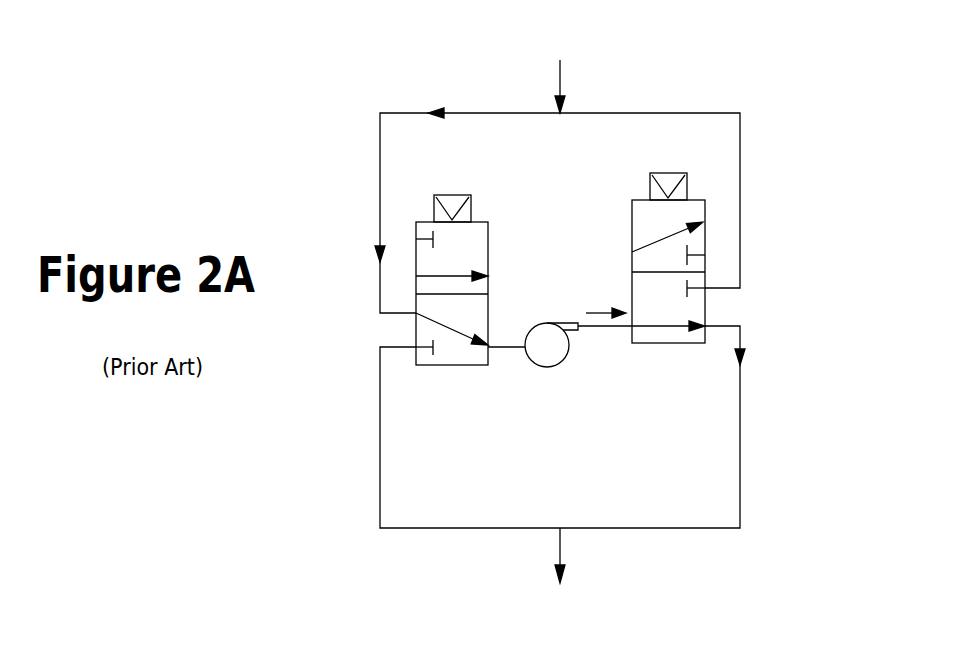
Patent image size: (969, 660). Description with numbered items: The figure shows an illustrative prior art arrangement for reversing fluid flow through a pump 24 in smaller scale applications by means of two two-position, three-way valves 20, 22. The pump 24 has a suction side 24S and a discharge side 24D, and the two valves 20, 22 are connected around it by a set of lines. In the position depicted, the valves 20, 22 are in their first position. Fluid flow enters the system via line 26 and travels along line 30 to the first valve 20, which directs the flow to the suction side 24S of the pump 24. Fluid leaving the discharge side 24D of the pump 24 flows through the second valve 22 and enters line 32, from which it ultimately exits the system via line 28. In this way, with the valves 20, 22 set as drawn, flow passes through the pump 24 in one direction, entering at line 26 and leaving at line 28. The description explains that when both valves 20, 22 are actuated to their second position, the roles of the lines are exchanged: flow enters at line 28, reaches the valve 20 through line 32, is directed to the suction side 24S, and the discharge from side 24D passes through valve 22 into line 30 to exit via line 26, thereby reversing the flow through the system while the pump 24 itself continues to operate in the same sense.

The three-way valve 20 is at (472, 245).
The three-way valve 22 is at (650, 222).
The pump 24 is at (555, 348).
The suction side 24S is at (507, 348).
The discharge side 24D is at (613, 327).
The line 26 is at (560, 73).
The line 28 is at (563, 548).
The line 30 is at (390, 113).
The line 32 is at (700, 528).